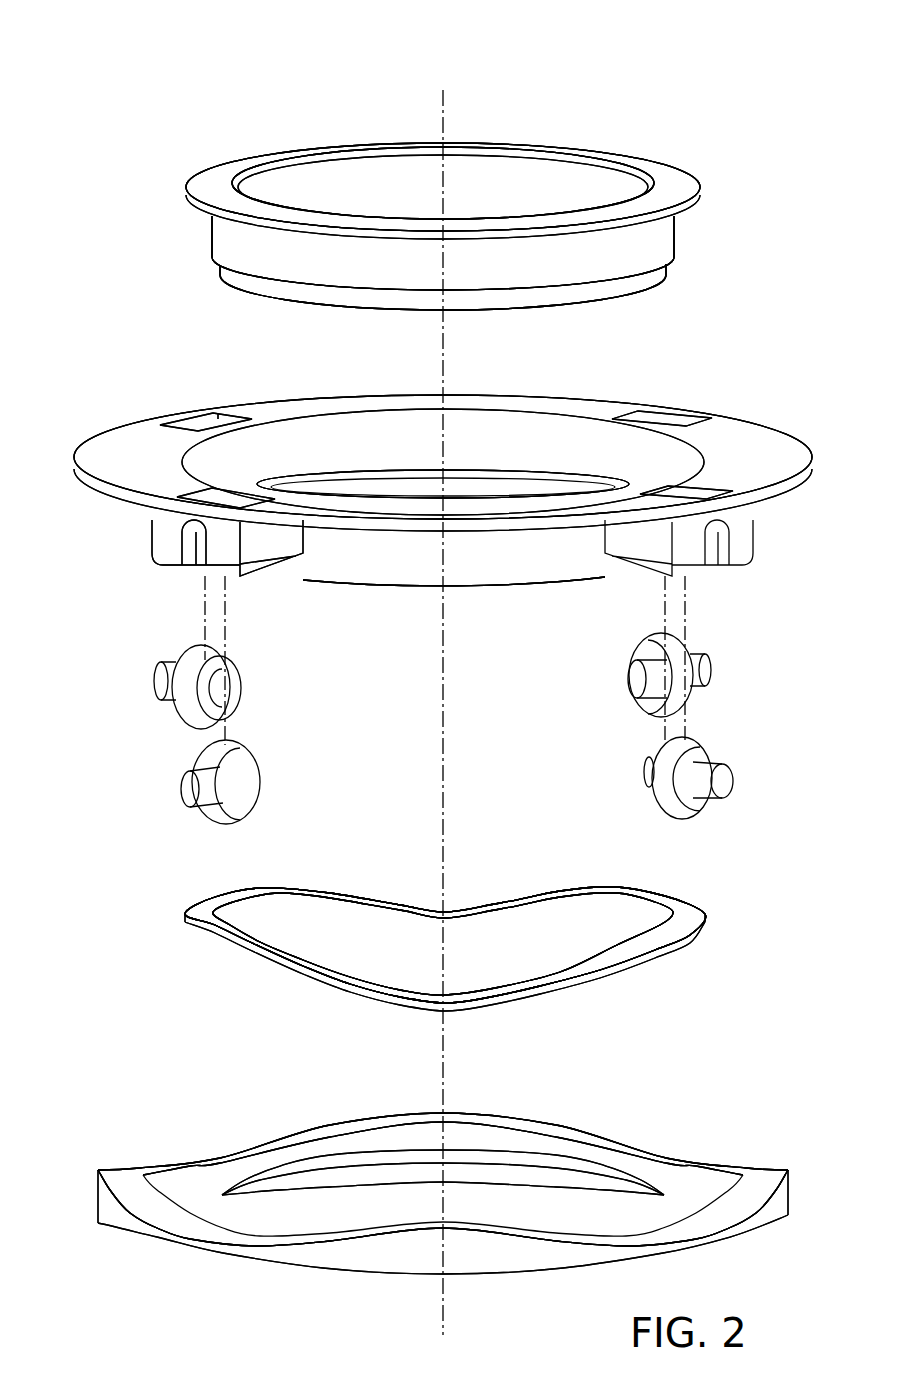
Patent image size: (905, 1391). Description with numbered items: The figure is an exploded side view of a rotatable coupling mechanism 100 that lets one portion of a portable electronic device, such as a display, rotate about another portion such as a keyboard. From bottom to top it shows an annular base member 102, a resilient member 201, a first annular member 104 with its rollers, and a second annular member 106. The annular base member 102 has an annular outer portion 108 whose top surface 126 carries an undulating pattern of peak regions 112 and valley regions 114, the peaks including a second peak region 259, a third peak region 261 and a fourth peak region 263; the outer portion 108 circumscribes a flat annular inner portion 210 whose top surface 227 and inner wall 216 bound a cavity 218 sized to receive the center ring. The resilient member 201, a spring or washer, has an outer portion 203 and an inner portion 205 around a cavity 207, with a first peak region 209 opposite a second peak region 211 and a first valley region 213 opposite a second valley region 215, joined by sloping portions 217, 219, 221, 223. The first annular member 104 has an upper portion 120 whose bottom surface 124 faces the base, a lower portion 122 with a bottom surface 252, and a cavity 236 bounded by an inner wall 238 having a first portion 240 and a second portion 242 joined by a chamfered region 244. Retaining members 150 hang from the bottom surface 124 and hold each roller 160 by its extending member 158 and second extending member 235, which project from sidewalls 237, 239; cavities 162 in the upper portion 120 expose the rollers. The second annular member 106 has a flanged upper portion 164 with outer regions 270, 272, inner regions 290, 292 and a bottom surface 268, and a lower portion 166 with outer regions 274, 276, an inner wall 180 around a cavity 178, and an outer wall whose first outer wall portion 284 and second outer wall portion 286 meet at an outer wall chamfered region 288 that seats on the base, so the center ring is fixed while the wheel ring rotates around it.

The rotatable coupling mechanism 100 is at (678, 72).
The annular base member 102 is at (790, 1213).
The first annular member 104 is at (626, 574).
The second annular member 106 is at (676, 238).
The annular outer portion 108 is at (97, 1222).
The peak region 112 is at (118, 1166).
The valley region 114 is at (195, 1238).
The upper portion 120 is at (118, 432).
The lower portion 122 is at (310, 582).
The bottom surface 124 is at (792, 497).
The top surface 126 is at (735, 1232).
The retaining member 150 is at (152, 548).
The extending member 158 is at (190, 792).
The roller 160 is at (220, 782).
The cavity 162 is at (668, 412).
The upper portion 164 is at (690, 178).
The lower portion 166 is at (213, 255).
The cavity 178 is at (500, 196).
The inner wall 180 is at (578, 162).
The resilient member 201 is at (688, 893).
The outer portion 203 is at (200, 898).
The inner portion 205 is at (573, 910).
The cavity 207 is at (487, 925).
The first peak region 209 is at (703, 912).
The annular inner portion 210 is at (180, 1190).
The second peak region 211 is at (212, 930).
The first valley region 213 is at (465, 1006).
The second valley region 215 is at (430, 915).
The inner wall 216 is at (253, 1188).
The transition portion 217 is at (325, 966).
The cavity 218 is at (308, 1196).
The transition portion 219 is at (560, 982).
The transition portion 221 is at (562, 890).
The transition portion 223 is at (333, 890).
The top surface 227 is at (700, 1180).
The second extending member 235 is at (236, 690).
The cavity 236 is at (563, 455).
The sidewall 237 is at (714, 757).
The inner wall 238 is at (350, 430).
The sidewall 239 is at (640, 660).
The first portion 240 is at (300, 455).
The second portion 242 is at (358, 486).
The chamfered region 244 is at (416, 485).
The bottom surface 252 is at (518, 586).
The second peak region 259 is at (777, 1168).
The third peak region 261 is at (470, 1236).
The fourth peak region 263 is at (415, 1112).
The bottom surface 268 is at (192, 210).
The outer region 270 is at (186, 182).
The outer region 272 is at (703, 190).
The outer region 274 is at (213, 270).
The outer region 276 is at (676, 260).
The first outer wall portion 284 is at (628, 278).
The second outer wall portion 286 is at (588, 295).
The outer wall chamfered region 288 is at (547, 295).
The inner region 290 is at (258, 172).
The inner region 292 is at (630, 165).